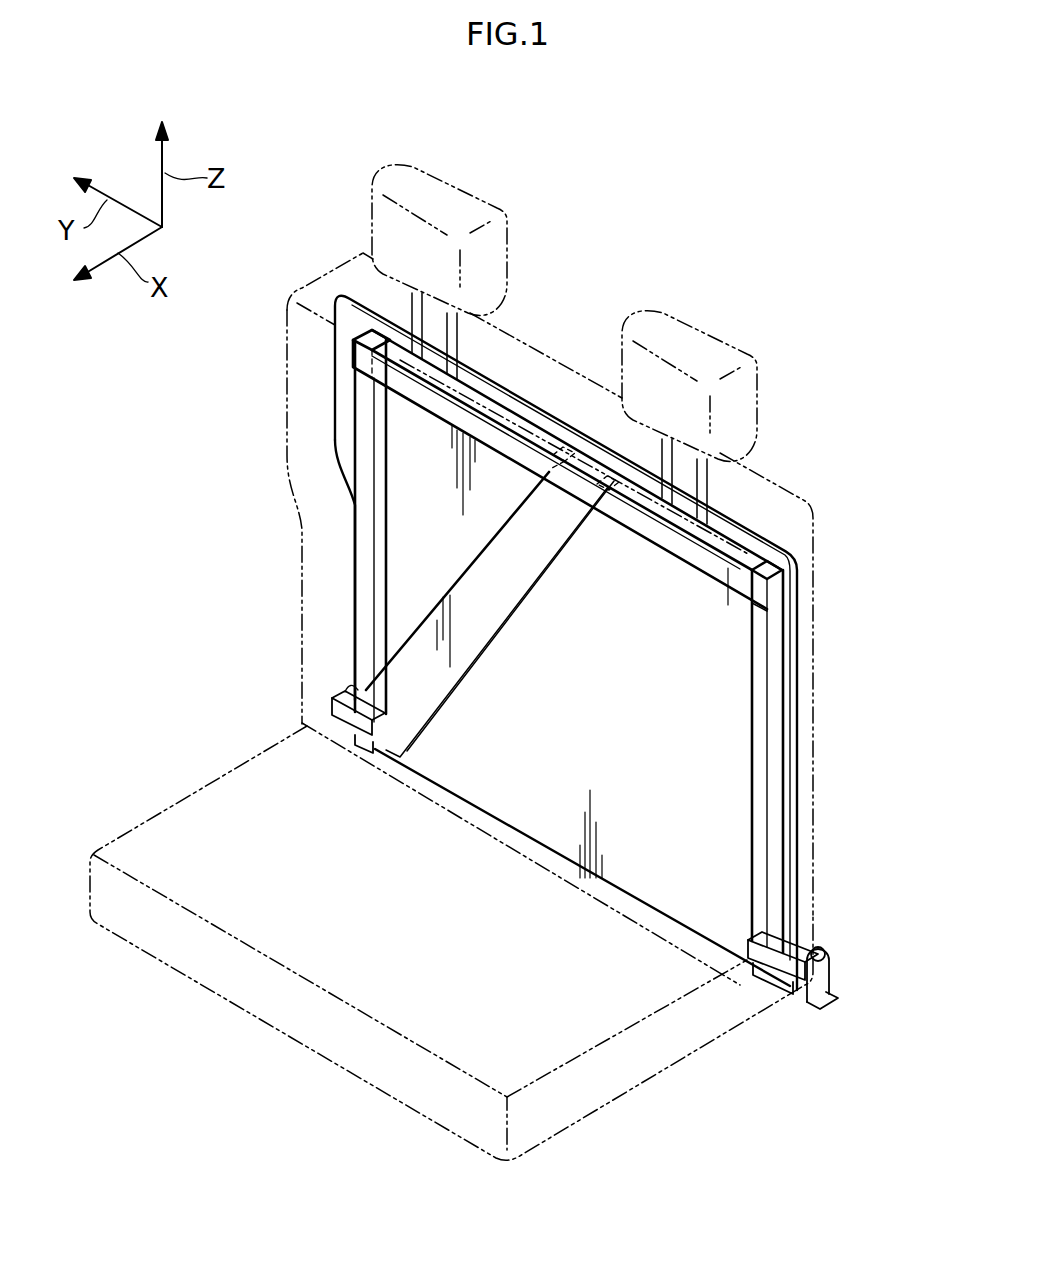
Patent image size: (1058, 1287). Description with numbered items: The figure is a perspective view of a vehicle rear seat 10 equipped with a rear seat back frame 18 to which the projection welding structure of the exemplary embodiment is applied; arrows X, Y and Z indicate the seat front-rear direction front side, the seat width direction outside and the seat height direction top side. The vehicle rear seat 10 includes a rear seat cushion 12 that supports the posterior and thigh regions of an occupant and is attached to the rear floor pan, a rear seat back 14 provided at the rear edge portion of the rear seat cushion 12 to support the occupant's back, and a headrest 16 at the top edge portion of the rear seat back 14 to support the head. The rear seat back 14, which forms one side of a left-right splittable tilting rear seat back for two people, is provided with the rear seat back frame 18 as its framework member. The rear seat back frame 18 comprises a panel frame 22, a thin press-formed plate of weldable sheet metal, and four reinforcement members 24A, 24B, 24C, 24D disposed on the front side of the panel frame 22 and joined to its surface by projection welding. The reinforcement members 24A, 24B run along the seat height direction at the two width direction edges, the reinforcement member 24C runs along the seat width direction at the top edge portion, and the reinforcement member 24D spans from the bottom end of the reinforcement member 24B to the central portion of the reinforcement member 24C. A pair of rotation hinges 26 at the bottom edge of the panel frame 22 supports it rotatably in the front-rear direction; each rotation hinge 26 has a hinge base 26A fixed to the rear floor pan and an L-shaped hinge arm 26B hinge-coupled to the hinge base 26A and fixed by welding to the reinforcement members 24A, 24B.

The vehicle rear seat 10 is at (884, 362).
The rear seat cushion 12 is at (310, 1050).
The rear seat back 14 is at (815, 598).
The headrest 16 is at (460, 183).
The rear seat back frame 18 is at (553, 729).
The panel frame 22 is at (640, 857).
The reinforcement member 24A is at (768, 757).
The reinforcement member 24B is at (356, 528).
The reinforcement member 24C is at (528, 435).
The reinforcement member 24D is at (492, 602).
The rotation hinge 26 is at (547, 881).
The hinge base 26A is at (832, 1001).
The hinge arm 26B is at (340, 716).